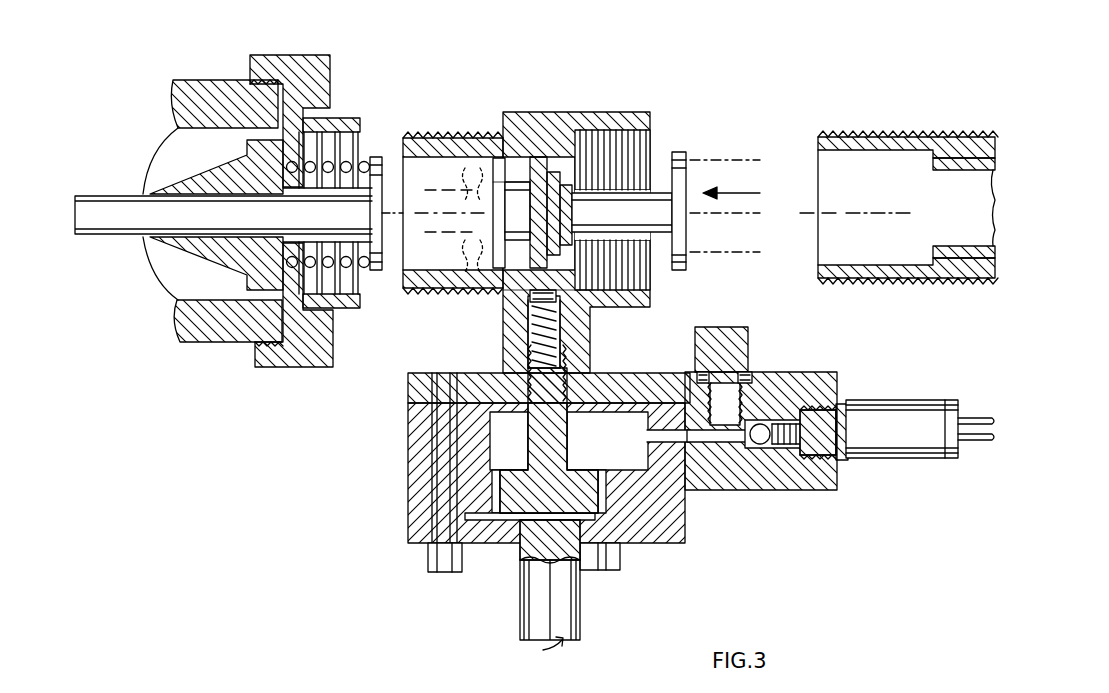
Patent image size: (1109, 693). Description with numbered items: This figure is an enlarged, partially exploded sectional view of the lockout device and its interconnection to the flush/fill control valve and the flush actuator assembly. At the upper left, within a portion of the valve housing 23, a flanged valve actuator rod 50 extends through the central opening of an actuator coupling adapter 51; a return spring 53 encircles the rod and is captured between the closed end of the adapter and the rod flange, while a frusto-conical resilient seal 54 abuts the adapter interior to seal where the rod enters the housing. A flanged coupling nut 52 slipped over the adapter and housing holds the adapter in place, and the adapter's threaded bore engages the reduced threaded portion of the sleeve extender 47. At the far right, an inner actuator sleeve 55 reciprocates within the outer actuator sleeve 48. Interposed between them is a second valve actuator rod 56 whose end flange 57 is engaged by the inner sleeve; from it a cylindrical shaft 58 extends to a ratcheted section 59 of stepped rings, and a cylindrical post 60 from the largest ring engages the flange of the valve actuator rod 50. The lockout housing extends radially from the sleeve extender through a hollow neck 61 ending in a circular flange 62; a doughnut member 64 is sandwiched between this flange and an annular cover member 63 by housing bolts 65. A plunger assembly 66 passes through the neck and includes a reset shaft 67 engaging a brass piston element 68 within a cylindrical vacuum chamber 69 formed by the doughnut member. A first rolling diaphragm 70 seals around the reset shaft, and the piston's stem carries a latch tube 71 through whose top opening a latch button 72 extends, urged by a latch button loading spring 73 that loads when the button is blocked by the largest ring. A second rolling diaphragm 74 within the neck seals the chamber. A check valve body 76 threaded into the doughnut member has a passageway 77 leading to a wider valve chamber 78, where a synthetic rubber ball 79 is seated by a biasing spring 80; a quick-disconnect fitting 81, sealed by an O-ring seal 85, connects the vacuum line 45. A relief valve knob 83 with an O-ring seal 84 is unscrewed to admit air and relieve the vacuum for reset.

The valve housing 23 is at (245, 80).
The vacuum line 45 is at (985, 442).
The sleeve extender 47 is at (565, 130).
The outer actuator sleeve 48 is at (882, 135).
The valve actuator rod 50 is at (125, 218).
The actuator coupling adapter 51 is at (345, 118).
The flanged coupling nut 52 is at (330, 62).
The return spring 53 is at (350, 160).
The frusto-conical resilient seal 54 is at (170, 185).
The inner actuator sleeve 55 is at (932, 188).
The second valve actuator rod 56 is at (744, 193).
The end flange 57 is at (684, 152).
The cylindrical shaft 58 is at (640, 206).
The ratcheted section 59 is at (548, 160).
The cylindrical post 60 is at (512, 205).
The hollow neck 61 is at (588, 334).
The circular flange 62 is at (628, 373).
The annular cover member 63 is at (668, 545).
The doughnut member 64 is at (408, 448).
The housing bolts 65 is at (445, 572).
The plunger assembly 66 is at (536, 660).
The reset shaft 67 is at (535, 598).
The piston element 68 is at (585, 470).
The vacuum chamber 69 is at (500, 452).
The first rolling diaphragm 70 is at (604, 470).
The latch tube 71 is at (528, 340).
The latch button 72 is at (527, 291).
The latch button loading spring 73 is at (530, 312).
The second rolling diaphragm 74 is at (520, 357).
The check valve body 76 is at (818, 490).
The passageway 77 is at (715, 480).
The valve chamber 78 is at (790, 465).
The synthetic rubber ball 79 is at (760, 480).
The biasing spring 80 is at (805, 410).
The quick-disconnect fitting 81 is at (902, 429).
The knob 83 is at (722, 327).
The O-ring seal 84 is at (750, 378).
The O-ring seal 85 is at (845, 404).